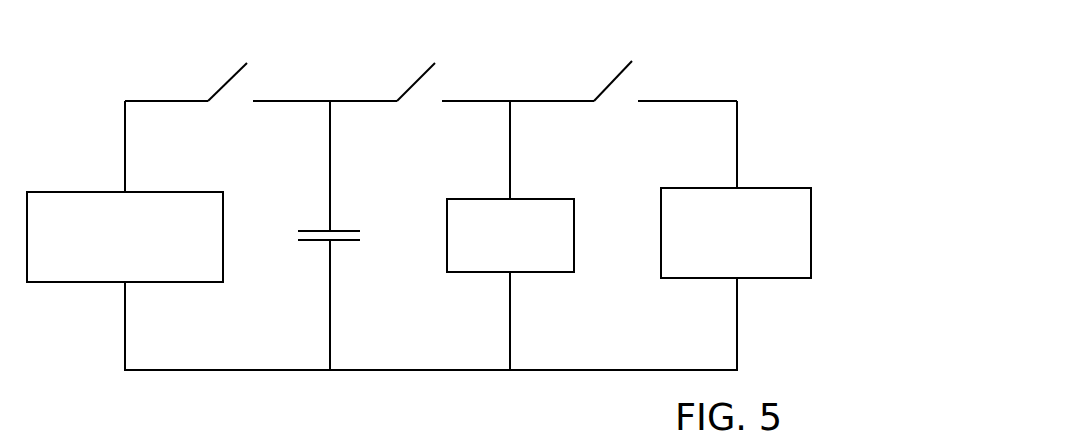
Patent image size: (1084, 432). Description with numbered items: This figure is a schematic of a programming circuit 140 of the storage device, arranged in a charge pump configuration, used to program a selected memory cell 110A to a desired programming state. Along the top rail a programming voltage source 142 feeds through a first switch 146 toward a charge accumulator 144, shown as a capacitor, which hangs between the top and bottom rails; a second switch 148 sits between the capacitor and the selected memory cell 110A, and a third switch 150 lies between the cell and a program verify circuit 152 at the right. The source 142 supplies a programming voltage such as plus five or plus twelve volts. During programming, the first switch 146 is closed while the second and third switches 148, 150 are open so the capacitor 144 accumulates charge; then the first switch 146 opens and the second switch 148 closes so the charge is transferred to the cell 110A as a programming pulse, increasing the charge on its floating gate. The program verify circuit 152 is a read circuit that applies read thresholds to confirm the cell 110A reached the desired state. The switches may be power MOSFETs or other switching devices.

The programming circuit 140 is at (697, 32).
The programming voltage source 142 is at (158, 190).
The charge accumulator 144 is at (343, 230).
The switch S1 146 is at (225, 83).
The switch S2 148 is at (415, 80).
The switch S3 150 is at (610, 78).
The selected memory cell 110A is at (533, 200).
The program verify circuit 152 is at (762, 188).